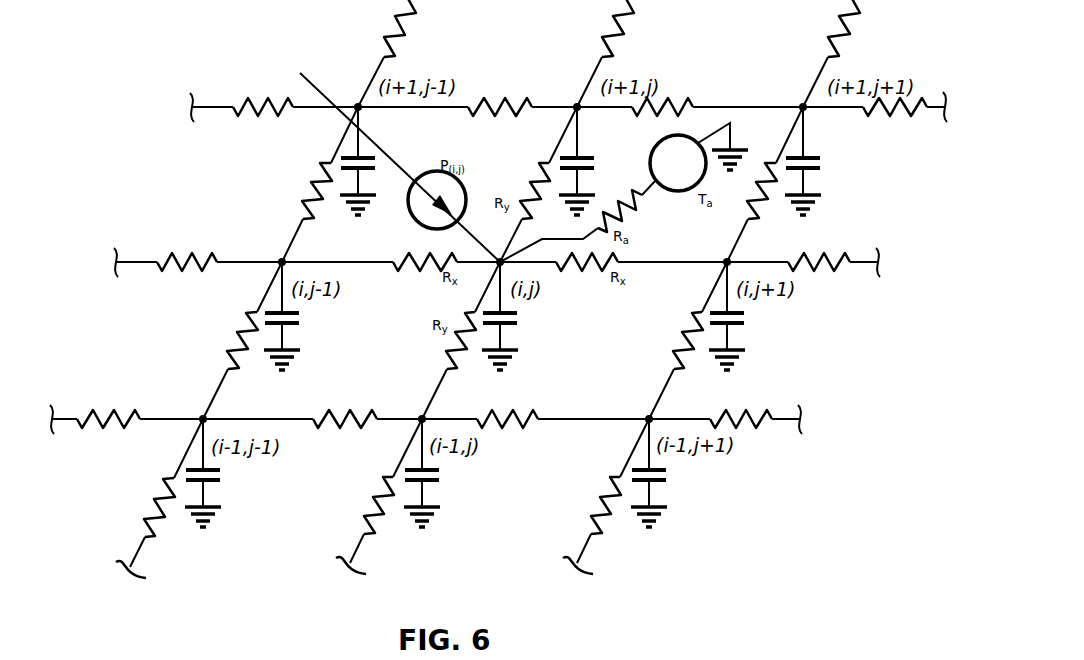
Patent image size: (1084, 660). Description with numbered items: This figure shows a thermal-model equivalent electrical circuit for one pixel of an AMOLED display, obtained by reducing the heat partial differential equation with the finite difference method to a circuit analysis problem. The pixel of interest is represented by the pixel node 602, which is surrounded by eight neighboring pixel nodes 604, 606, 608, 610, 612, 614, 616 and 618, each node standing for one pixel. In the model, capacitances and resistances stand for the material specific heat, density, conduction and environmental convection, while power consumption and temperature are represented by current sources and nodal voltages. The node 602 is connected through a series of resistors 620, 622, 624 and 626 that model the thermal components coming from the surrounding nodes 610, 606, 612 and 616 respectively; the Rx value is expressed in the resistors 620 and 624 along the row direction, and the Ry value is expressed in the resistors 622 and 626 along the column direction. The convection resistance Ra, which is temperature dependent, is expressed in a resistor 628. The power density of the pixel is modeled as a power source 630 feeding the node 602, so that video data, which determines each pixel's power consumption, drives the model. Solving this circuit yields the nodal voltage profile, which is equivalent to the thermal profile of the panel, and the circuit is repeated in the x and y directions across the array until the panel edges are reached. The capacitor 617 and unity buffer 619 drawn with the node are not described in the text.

The pixel node 602 is at (500, 262).
The neighboring pixel node 604 is at (358, 107).
The neighboring pixel node 606 is at (577, 107).
The neighboring pixel node 608 is at (803, 107).
The neighboring pixel node 610 is at (282, 262).
The neighboring pixel node 612 is at (727, 262).
The neighboring pixel node 614 is at (203, 419).
The neighboring pixel node 616 is at (422, 419).
The pixel capacitance to ground 617 is at (518, 317).
The neighboring pixel node 618 is at (649, 419).
The unity-gain buffer amplifier 619 is at (650, 163).
The resistor 620 is at (418, 252).
The resistor 622 is at (523, 193).
The resistor 624 is at (597, 268).
The resistor 626 is at (448, 345).
The resistor 628 is at (636, 205).
The power source 630 is at (427, 173).